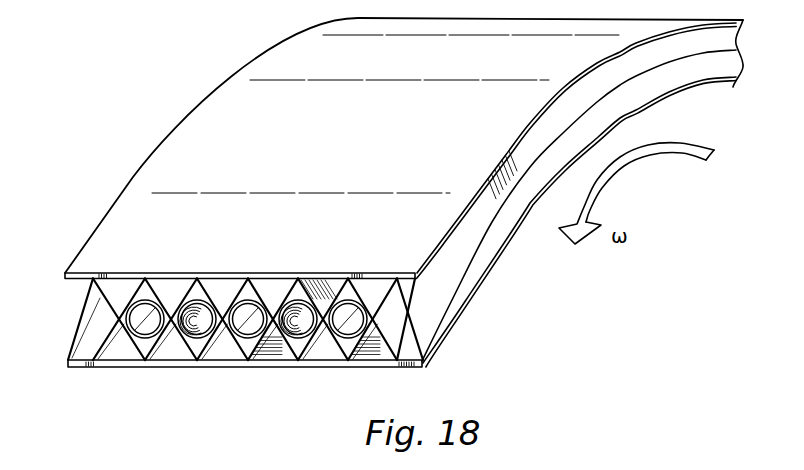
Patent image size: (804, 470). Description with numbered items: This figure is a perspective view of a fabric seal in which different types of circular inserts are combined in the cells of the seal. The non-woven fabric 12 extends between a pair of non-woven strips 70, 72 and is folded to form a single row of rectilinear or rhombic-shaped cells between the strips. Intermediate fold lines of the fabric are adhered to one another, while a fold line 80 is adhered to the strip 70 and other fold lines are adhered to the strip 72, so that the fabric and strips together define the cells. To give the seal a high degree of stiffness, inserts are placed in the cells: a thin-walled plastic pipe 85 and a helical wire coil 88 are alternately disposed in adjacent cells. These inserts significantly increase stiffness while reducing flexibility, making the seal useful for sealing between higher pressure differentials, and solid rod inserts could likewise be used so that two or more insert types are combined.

The non-woven fabric 12 is at (97, 297).
The non-woven strip 70 is at (194, 168).
The non-woven strip 72 is at (311, 368).
The fold line 80 is at (233, 285).
The plastic pipe 85 is at (137, 323).
The helical wire coil 88 is at (195, 320).